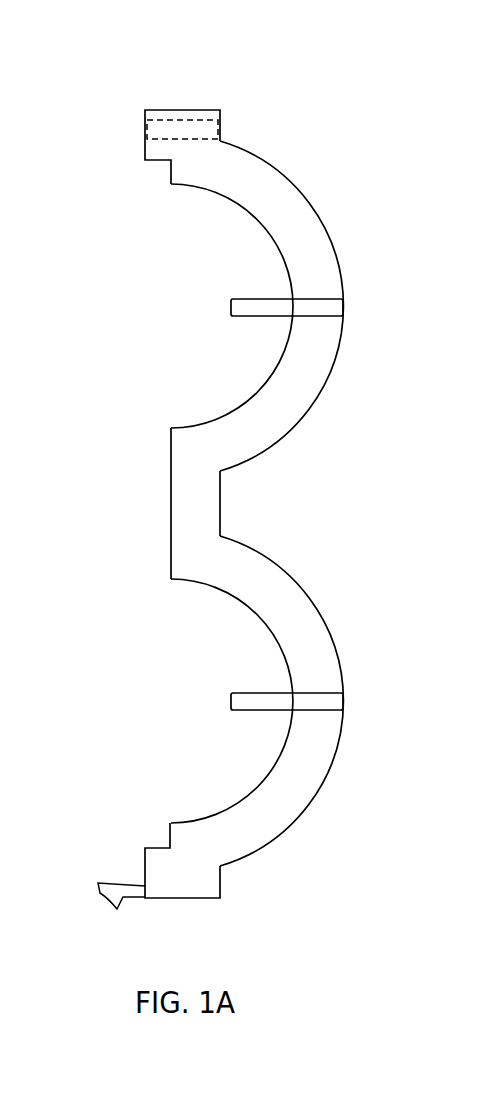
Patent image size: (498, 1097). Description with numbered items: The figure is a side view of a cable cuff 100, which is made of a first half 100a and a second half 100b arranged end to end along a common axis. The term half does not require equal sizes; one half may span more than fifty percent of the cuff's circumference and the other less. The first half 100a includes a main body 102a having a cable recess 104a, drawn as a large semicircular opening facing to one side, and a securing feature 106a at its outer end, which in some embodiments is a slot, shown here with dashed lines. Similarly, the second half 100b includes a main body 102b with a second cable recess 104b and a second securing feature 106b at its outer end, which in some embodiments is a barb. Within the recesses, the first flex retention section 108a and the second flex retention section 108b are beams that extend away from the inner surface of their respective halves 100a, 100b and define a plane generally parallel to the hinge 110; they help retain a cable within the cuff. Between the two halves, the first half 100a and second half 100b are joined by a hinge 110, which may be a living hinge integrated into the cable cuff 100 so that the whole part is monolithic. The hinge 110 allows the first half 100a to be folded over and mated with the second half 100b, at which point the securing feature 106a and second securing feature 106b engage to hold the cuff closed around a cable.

The cable cuff 100 is at (91, 102).
The first half 100a is at (365, 315).
The second half 100b is at (365, 734).
The main body 102a is at (283, 200).
The main body 102b is at (318, 637).
The cable recess 104a is at (158, 314).
The second cable recess 104b is at (160, 756).
The securing feature 106a is at (177, 128).
The second securing feature 106b is at (132, 892).
The flex retention section 108a is at (260, 305).
The second flex retention section 108b is at (262, 700).
The hinge 110 is at (205, 490).